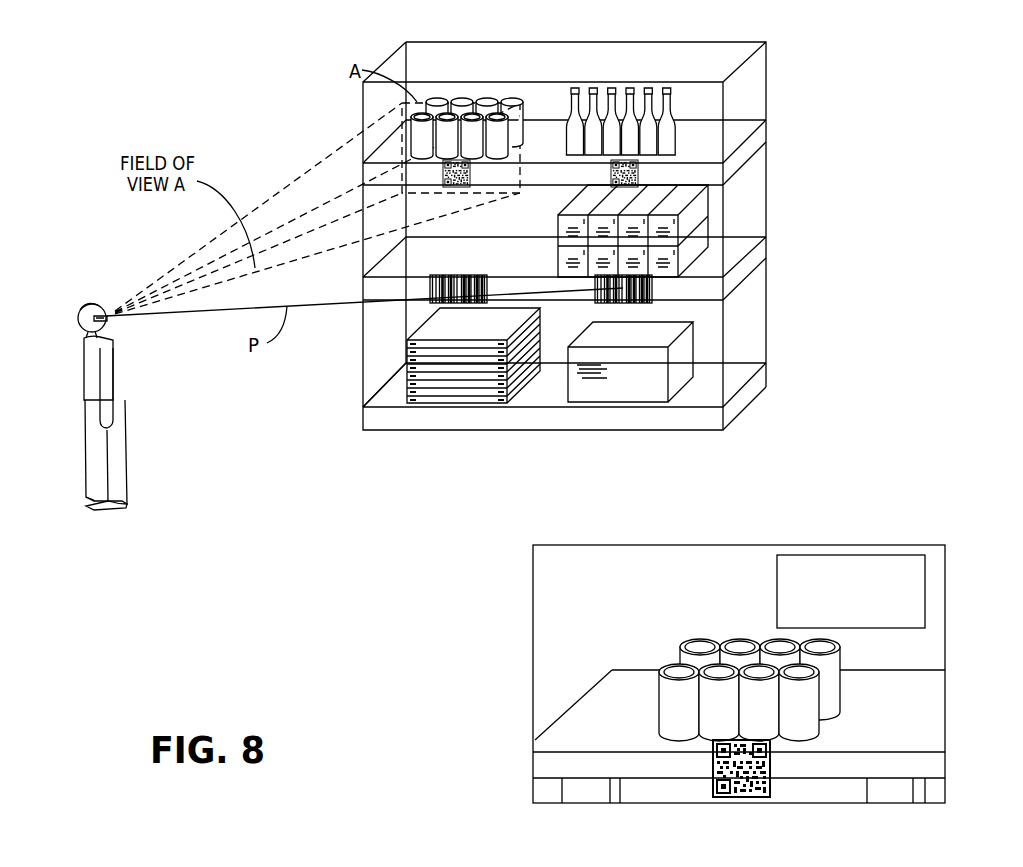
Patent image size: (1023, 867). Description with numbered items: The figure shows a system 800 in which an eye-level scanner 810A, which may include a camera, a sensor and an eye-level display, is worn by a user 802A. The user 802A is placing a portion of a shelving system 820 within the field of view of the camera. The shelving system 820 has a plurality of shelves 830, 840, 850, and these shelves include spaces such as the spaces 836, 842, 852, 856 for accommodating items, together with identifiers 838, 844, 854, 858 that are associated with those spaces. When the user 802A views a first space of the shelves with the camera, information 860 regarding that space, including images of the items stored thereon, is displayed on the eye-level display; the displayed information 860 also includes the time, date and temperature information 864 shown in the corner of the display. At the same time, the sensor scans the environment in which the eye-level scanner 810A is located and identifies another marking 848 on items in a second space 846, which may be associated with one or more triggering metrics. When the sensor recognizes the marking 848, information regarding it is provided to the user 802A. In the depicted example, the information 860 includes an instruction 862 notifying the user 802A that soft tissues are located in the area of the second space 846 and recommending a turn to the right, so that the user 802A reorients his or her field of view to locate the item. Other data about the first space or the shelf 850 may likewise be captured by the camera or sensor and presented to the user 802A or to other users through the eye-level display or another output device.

The system 800 is at (235, 107).
The user 802A is at (92, 275).
The eye-level scanner 810A is at (112, 305).
The shelving system 820 is at (320, 78).
The shelf 830 is at (390, 158).
The space 836 is at (687, 88).
The identifier 838 is at (668, 138).
The shelf 840 is at (383, 270).
The space 842 is at (470, 230).
The identifier 844 is at (473, 275).
The second space 846 is at (710, 207).
The marking 848 is at (618, 305).
The shelf 850 is at (610, 177).
The space 852 is at (520, 390).
The identifier 854 is at (453, 431).
The space 856 is at (698, 345).
The identifier 858 is at (617, 431).
The information 860 is at (568, 645).
The instruction 862 is at (860, 553).
The time, date and temperature information 864 is at (633, 570).